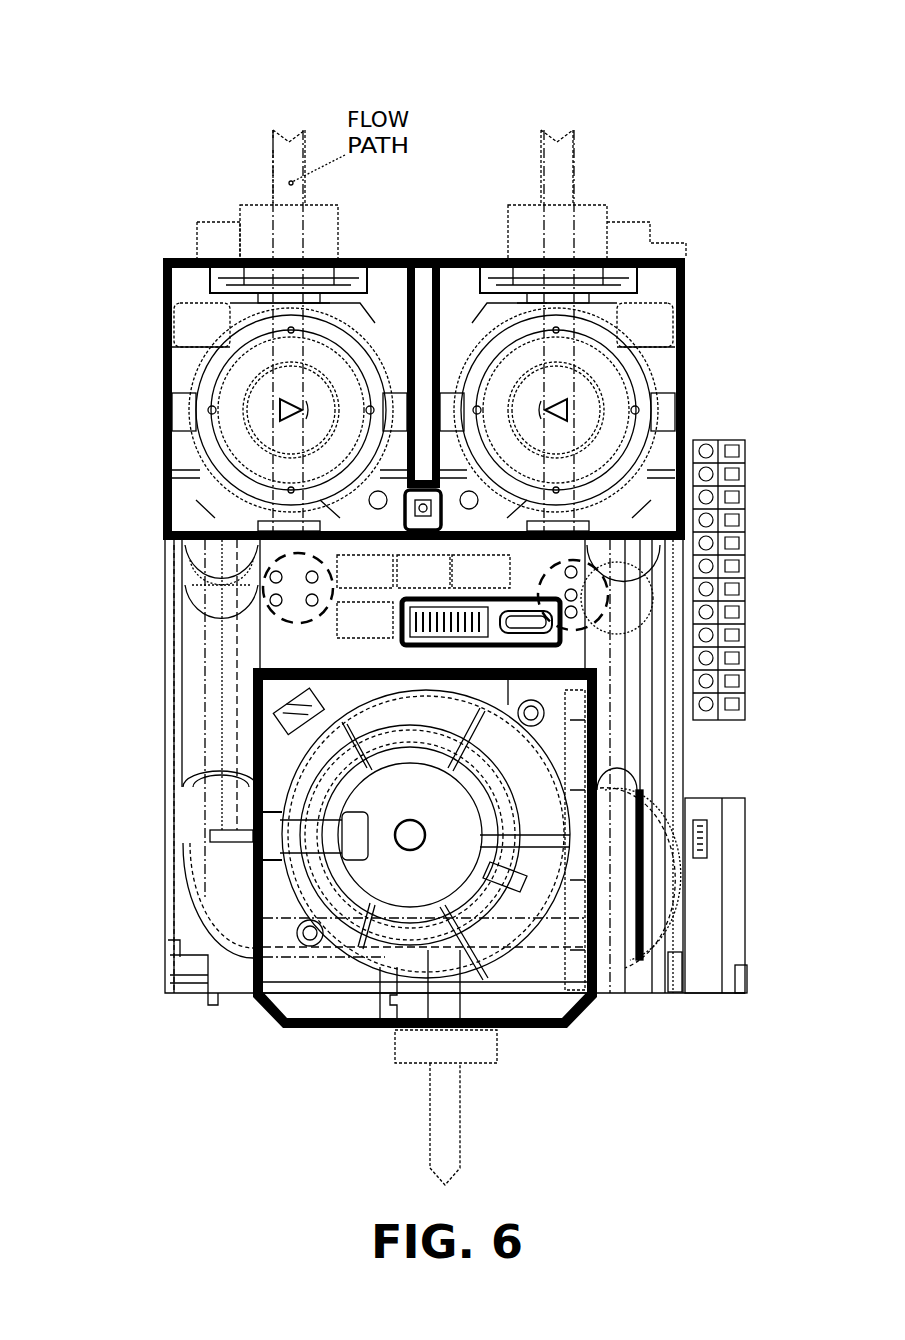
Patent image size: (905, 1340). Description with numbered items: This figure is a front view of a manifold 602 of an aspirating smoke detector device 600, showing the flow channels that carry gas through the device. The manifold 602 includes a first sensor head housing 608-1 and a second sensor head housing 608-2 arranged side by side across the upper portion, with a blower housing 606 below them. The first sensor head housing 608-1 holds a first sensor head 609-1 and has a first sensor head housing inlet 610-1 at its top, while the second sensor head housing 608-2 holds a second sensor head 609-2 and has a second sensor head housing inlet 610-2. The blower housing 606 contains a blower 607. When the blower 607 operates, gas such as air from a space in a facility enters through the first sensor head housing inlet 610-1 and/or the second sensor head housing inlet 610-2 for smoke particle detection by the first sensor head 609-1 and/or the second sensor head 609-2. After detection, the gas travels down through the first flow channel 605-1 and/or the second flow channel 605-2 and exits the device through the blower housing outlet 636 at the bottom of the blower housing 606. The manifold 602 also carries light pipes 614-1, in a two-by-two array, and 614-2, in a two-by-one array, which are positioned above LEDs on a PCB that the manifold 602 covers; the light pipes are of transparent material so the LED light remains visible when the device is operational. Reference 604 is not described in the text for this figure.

The aspirating smoke detector device 600 is at (212, 68).
The manifold 602 is at (165, 785).
The housing cavity 604 is at (187, 630).
The first flow channel 605-1 is at (195, 706).
The second flow channel 605-2 is at (633, 670).
The blower housing 606 is at (240, 945).
The blower 607 is at (528, 866).
The first sensor head housing 608-1 is at (165, 325).
The second sensor head housing 608-2 is at (685, 325).
The first sensor head 609-1 is at (235, 410).
The second sensor head 609-2 is at (608, 408).
The first sensor head housing inlet 610-1 is at (238, 211).
The second sensor head housing inlet 610-2 is at (608, 208).
The light pipe 614-1 is at (243, 588).
The light pipe 614-2 is at (612, 600).
The blower housing outlet 636 is at (395, 1049).